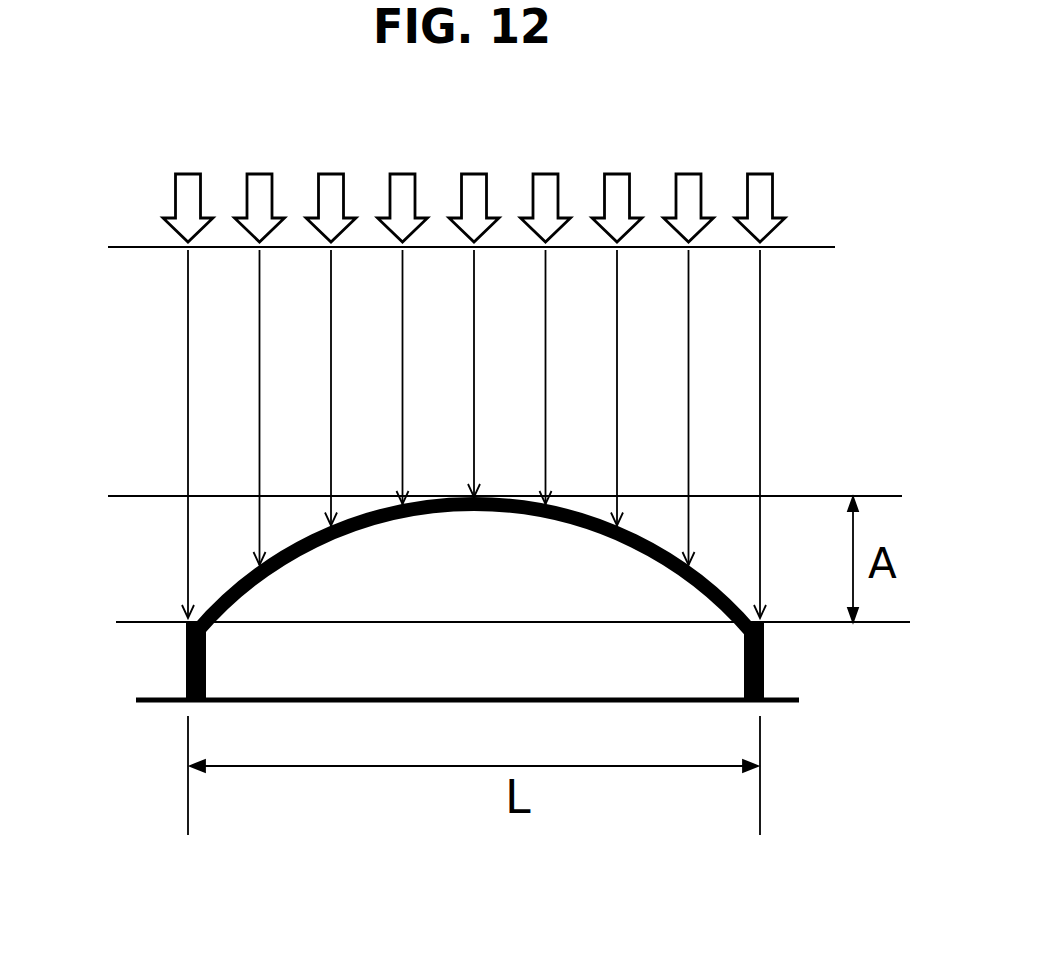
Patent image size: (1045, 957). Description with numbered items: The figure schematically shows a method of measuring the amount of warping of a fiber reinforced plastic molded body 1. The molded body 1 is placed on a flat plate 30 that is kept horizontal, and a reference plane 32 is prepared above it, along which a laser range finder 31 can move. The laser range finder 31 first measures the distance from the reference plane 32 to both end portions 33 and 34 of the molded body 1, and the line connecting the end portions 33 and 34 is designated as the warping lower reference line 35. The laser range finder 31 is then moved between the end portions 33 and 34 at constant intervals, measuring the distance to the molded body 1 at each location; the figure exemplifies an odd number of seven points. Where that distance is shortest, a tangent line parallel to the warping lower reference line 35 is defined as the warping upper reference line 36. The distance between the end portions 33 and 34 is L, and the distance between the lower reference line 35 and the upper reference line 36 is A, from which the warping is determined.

The fiber reinforced plastic molded body 1 is at (227, 584).
The flat plate 30 is at (160, 703).
The laser range finder 31 is at (162, 190).
The reference plane 32 is at (133, 248).
The end portion 33 is at (185, 623).
The end portion 34 is at (764, 624).
The warping lower reference line 35 is at (532, 624).
The warping upper reference line 36 is at (524, 498).